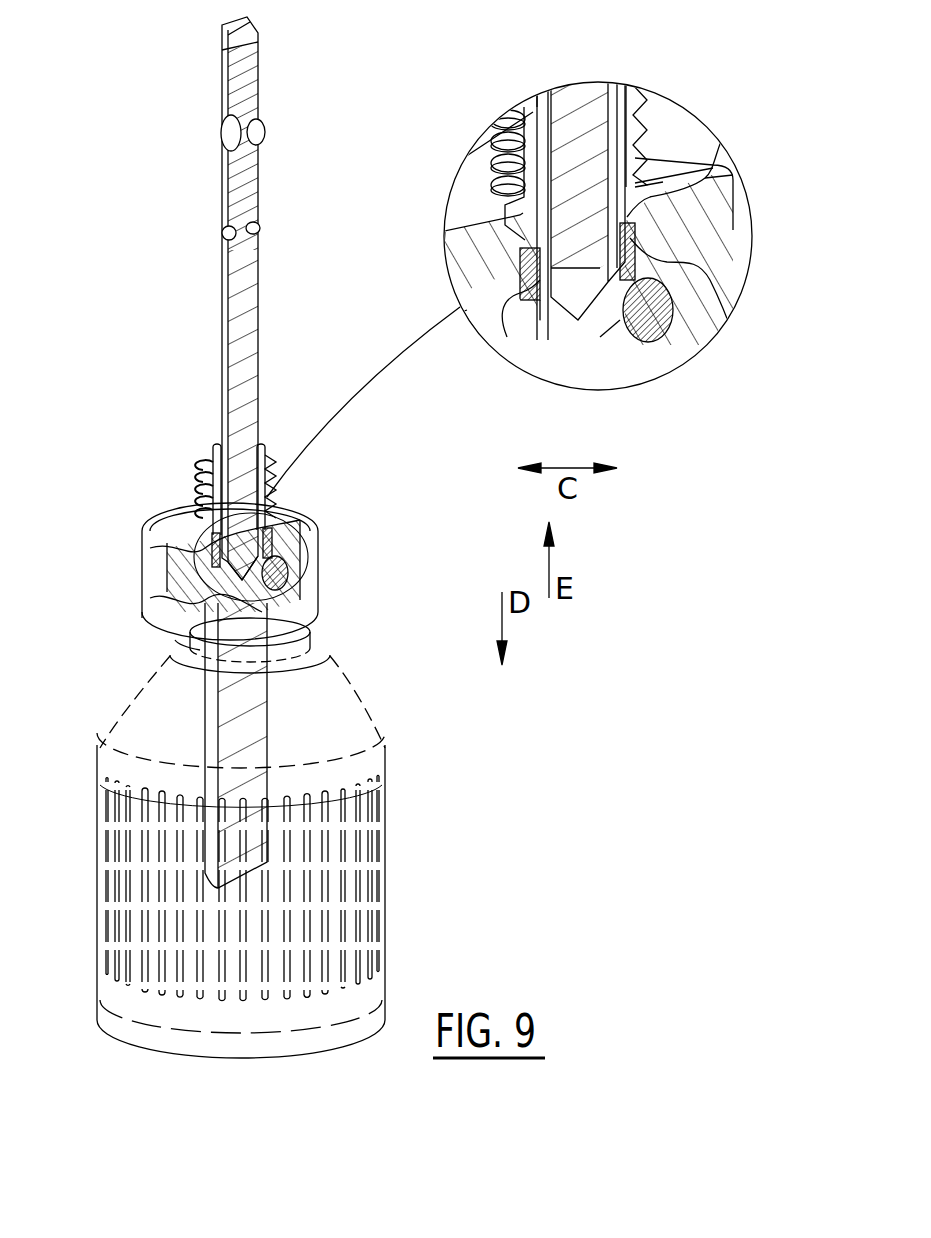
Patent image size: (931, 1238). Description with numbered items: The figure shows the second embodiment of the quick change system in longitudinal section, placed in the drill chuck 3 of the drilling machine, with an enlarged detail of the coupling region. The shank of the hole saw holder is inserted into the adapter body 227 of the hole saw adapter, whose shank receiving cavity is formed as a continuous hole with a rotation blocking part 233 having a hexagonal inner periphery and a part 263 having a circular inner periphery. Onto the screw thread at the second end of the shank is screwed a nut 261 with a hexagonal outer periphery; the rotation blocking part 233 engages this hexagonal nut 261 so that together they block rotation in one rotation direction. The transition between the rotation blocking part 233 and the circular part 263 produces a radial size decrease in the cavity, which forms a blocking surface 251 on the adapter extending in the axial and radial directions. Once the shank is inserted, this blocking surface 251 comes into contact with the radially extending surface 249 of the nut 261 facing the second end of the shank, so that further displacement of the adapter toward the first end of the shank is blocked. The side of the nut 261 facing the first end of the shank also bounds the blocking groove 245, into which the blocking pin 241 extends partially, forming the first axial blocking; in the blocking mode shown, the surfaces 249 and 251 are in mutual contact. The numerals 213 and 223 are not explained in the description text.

The drill chuck 3 is at (345, 699).
The shaft 213 is at (280, 279).
The shaft tip 223 is at (222, 590).
The adapter body 227 is at (297, 517).
The rotation blocking part 233 is at (300, 512).
The blocking pin 241 is at (287, 576).
The blocking groove 245 is at (187, 637).
The radially extending surface 249 is at (652, 320).
The blocking surface 251 is at (727, 128).
The nut 261 is at (200, 560).
The part having a circular inner periphery 263 is at (210, 572).